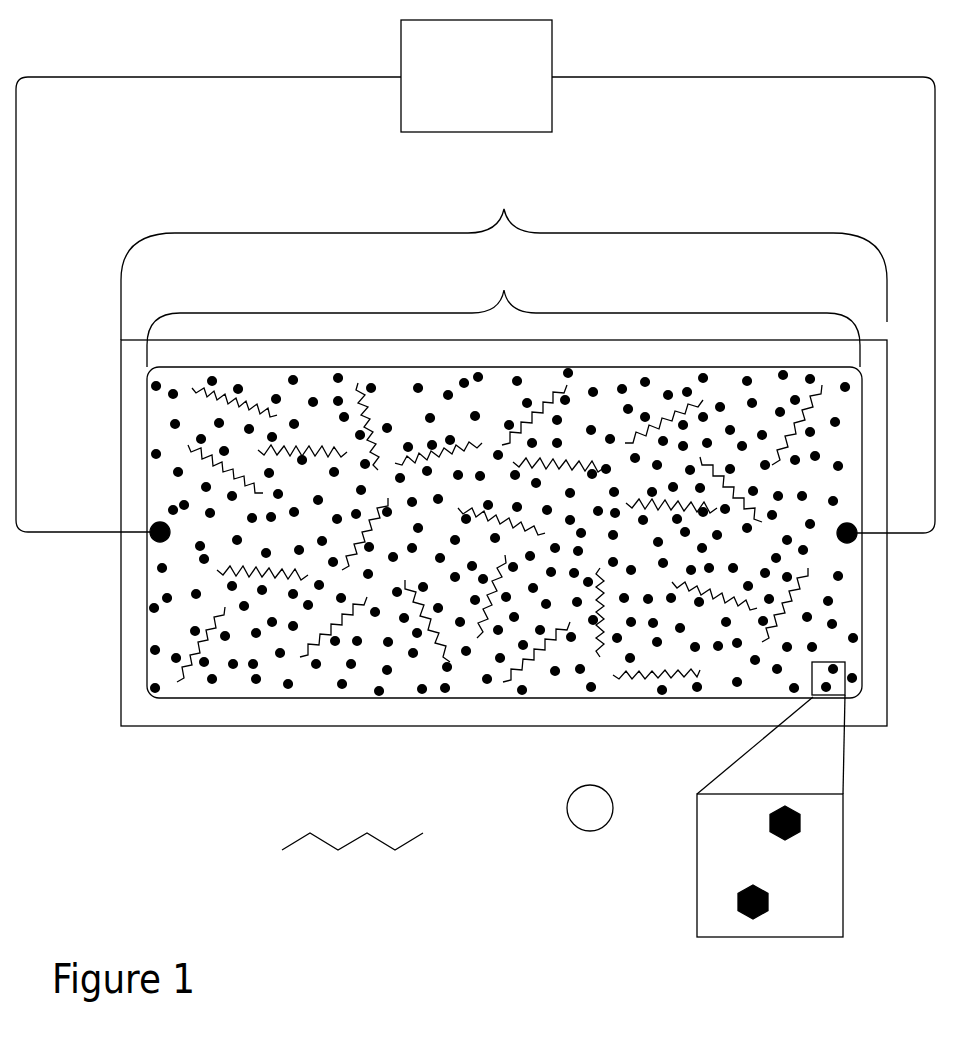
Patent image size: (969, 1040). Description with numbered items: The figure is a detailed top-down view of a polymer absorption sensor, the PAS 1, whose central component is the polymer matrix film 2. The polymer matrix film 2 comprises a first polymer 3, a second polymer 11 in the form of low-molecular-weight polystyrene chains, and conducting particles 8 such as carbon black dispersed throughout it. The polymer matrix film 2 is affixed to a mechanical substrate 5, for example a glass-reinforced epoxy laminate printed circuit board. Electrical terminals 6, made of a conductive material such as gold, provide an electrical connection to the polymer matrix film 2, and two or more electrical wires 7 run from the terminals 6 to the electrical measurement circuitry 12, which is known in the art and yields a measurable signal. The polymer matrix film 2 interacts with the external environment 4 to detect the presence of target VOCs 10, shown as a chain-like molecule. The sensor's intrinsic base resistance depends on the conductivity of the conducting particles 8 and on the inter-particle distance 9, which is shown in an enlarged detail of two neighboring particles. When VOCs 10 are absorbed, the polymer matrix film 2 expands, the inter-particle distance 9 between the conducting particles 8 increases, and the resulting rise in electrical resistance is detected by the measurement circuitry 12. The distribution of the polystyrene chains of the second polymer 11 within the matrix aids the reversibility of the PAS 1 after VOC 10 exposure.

The PAS 1 is at (504, 254).
The polymer matrix film 2 is at (503, 306).
The first polymer 3 is at (311, 681).
The external environment 4 is at (590, 808).
The mechanical substrate 5 is at (119, 339).
The electrical terminals 6 is at (151, 523).
The electrical wires 7 is at (104, 535).
The conducting particles 8 is at (214, 681).
The inter-particle distance 9 is at (781, 844).
The target VOCs 10 is at (291, 837).
The second polymer 11 is at (634, 683).
The electrical measurement circuitry 12 is at (476, 76).